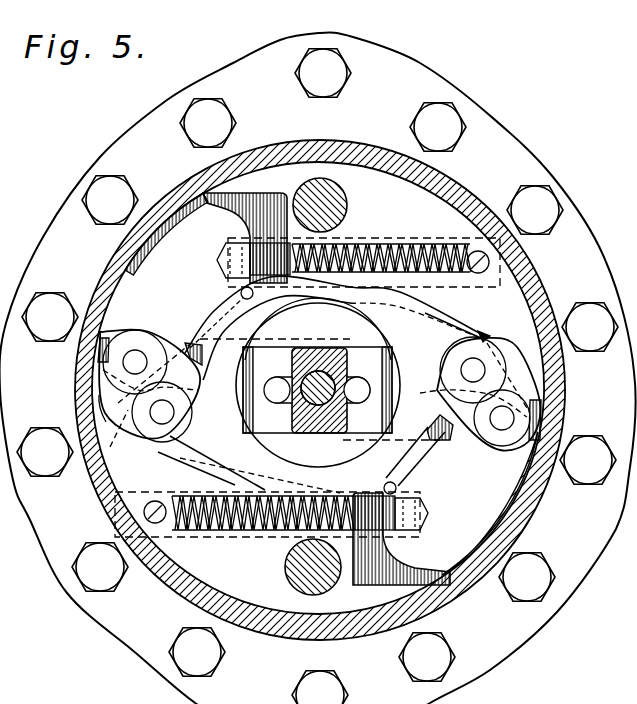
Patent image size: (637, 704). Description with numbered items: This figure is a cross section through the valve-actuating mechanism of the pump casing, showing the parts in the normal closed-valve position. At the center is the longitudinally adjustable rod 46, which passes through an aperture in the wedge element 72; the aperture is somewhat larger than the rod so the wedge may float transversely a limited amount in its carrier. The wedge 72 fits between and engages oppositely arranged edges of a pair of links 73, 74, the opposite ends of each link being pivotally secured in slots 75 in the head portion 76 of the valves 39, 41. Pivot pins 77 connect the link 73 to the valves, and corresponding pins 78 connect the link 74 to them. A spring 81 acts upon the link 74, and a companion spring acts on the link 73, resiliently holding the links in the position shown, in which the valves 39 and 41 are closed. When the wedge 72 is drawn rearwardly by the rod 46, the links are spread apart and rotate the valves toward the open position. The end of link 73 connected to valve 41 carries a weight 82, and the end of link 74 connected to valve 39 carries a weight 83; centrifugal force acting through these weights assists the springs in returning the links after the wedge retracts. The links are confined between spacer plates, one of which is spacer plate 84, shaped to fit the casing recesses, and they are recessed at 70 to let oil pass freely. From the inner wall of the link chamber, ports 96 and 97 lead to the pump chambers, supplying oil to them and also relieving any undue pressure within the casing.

The valve 39 is at (540, 370).
The valve 41 is at (100, 410).
The rod 46 is at (320, 376).
The recess 70 is at (280, 398).
The wedge element 72 is at (333, 413).
The link 73 is at (199, 287).
The link 74 is at (480, 517).
The slot 75 is at (505, 370).
The head portion 76 is at (540, 398).
The pivot pin 77 is at (472, 368).
The pivot pin 78 is at (263, 262).
The spring 81 is at (373, 540).
The weight 82 is at (177, 233).
The weight 83 is at (500, 510).
The spacer plate 84 is at (440, 312).
The port 96 is at (240, 297).
The port 97 is at (397, 490).